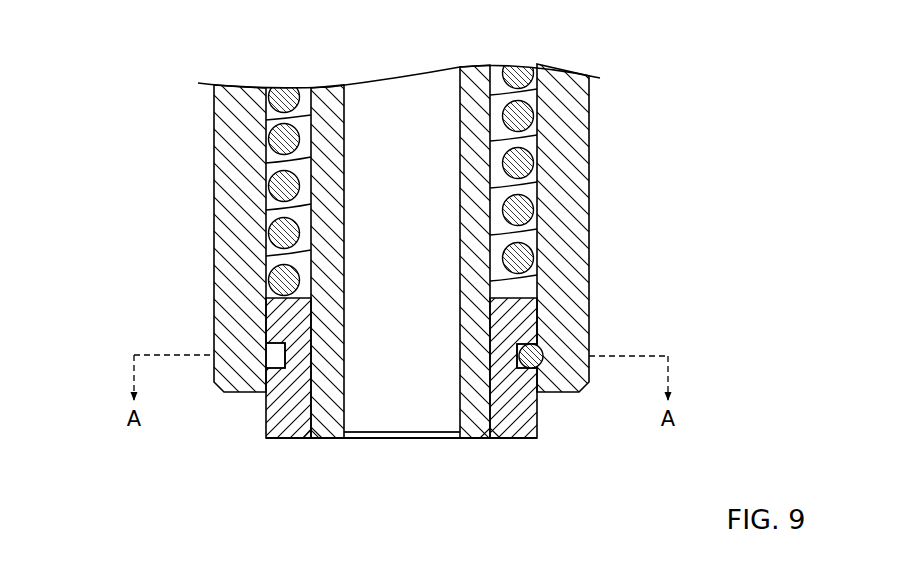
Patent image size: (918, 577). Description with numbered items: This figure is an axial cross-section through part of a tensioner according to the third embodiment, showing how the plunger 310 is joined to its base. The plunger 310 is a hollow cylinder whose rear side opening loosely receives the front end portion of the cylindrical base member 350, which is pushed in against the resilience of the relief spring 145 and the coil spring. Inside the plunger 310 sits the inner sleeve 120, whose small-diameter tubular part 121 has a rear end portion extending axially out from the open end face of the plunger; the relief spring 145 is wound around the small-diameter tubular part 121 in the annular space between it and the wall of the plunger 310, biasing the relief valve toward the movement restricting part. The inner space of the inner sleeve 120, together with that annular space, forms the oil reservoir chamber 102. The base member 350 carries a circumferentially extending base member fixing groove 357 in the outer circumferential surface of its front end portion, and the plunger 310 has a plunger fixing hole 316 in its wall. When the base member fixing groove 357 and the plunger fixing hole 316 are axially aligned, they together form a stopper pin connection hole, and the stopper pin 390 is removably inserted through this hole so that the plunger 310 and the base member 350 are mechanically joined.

The oil reservoir chamber 102 is at (418, 167).
The inner sleeve 120 is at (284, 185).
The small-diameter tubular part 121 is at (473, 432).
The relief spring 145 is at (528, 211).
The plunger 310 is at (212, 115).
The plunger fixing hole 316 is at (527, 370).
The base member 350 is at (262, 436).
The base member fixing groove 357 is at (272, 354).
The stopper pin 390 is at (544, 347).